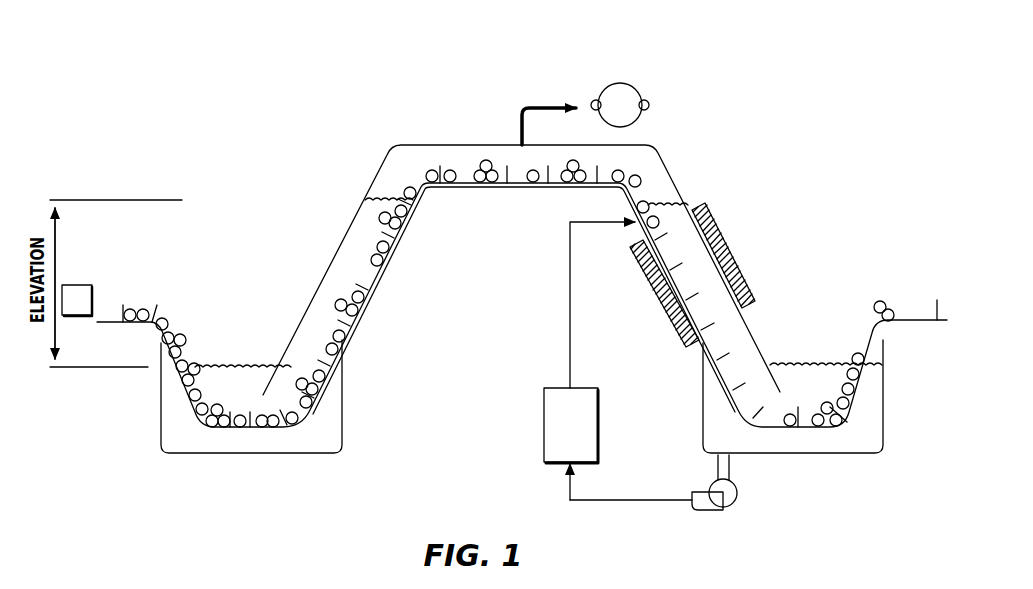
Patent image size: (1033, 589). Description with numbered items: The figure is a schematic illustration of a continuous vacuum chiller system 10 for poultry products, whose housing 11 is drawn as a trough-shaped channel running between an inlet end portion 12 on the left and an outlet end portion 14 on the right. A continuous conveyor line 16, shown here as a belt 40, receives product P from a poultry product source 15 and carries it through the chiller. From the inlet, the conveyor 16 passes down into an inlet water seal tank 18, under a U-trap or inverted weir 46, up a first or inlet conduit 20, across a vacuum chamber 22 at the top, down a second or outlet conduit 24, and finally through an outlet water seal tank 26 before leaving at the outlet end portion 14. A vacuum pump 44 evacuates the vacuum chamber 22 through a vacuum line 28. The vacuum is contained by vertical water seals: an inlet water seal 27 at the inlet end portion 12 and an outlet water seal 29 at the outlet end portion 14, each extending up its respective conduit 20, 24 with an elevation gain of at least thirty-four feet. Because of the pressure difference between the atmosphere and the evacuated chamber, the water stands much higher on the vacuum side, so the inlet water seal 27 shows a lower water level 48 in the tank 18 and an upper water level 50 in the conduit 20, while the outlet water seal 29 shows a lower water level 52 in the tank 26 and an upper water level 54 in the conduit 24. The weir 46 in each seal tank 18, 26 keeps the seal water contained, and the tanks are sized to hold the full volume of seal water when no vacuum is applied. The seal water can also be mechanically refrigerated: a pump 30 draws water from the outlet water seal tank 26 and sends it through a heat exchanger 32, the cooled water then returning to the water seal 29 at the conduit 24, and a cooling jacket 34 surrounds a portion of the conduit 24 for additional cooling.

The vacuum chiller system 10 is at (465, 62).
The channel housing 11 is at (420, 140).
The inlet end portion 12 is at (242, 238).
The outlet end portion 14 is at (815, 272).
The poultry product source 15 is at (122, 298).
The conveyor line 16 is at (200, 315).
The inlet water seal tank 18 is at (143, 437).
The first or inlet conduit 20 is at (365, 315).
The vacuum chamber 22 is at (485, 140).
The second or outlet conduit 24 is at (773, 337).
The outlet water seal tank 26 is at (886, 418).
The inlet water seal 27 is at (368, 236).
The vacuum line 28 is at (552, 107).
The outlet water seal 29 is at (742, 337).
The pump 30 is at (748, 508).
The heat exchanger 32 is at (601, 418).
The cooling jacket 34 is at (730, 242).
The belt 40 is at (377, 270).
The vacuum pump 44 is at (635, 78).
The U-trap or inverted weir 46 is at (267, 377).
The lower water level 48 is at (223, 357).
The upper water level 50 is at (378, 187).
The lower water level 52 is at (830, 338).
The upper water level 54 is at (667, 197).
The product P is at (170, 330).